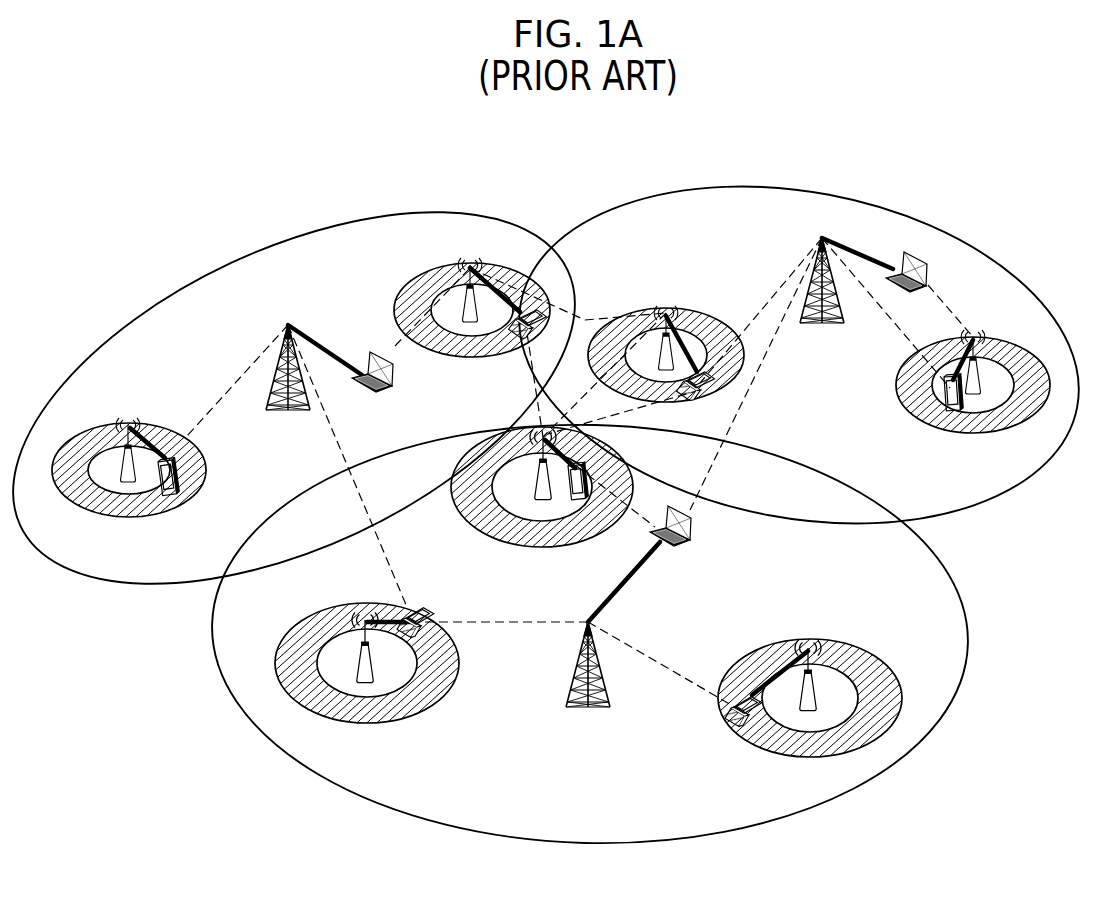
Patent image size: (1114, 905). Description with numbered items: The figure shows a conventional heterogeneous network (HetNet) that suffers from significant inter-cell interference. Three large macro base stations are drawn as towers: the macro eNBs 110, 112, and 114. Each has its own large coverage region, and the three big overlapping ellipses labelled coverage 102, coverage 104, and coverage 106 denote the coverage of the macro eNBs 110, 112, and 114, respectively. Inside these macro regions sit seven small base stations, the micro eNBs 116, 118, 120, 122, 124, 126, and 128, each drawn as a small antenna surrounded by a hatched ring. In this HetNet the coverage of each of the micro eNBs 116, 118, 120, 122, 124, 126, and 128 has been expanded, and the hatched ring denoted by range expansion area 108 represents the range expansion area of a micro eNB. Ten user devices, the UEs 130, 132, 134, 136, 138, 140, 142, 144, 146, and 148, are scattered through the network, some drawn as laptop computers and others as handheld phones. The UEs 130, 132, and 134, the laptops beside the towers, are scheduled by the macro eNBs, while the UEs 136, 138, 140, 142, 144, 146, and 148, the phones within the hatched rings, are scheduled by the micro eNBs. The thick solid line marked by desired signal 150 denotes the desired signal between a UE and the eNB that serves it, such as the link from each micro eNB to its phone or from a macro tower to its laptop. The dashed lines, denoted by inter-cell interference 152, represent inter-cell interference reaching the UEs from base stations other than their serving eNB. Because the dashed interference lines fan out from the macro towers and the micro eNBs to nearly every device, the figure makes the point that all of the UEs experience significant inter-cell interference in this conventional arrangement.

The coverage of macro eNB 102 is at (762, 828).
The coverage of macro eNB 104 is at (305, 228).
The coverage of macro eNB 106 is at (667, 193).
The range expansion area 108 is at (868, 663).
The macro eNB 110 is at (588, 707).
The macro eNB 112 is at (303, 352).
The macro eNB 114 is at (822, 325).
The micro eNB 116 is at (808, 645).
The micro eNB 118 is at (380, 663).
The micro eNB 120 is at (540, 500).
The micro eNB 122 is at (128, 422).
The micro eNB 124 is at (470, 262).
The micro eNB 126 is at (666, 309).
The micro eNB 128 is at (980, 337).
The UE 130 is at (693, 541).
The UE 132 is at (378, 387).
The UE 134 is at (917, 252).
The UE 136 is at (728, 723).
The UE 138 is at (422, 604).
The UE 140 is at (573, 503).
The UE 142 is at (177, 480).
The UE 144 is at (507, 343).
The UE 146 is at (700, 403).
The UE 148 is at (947, 413).
The desired signal 150 is at (152, 440).
The inter-cell interference 152 is at (247, 370).